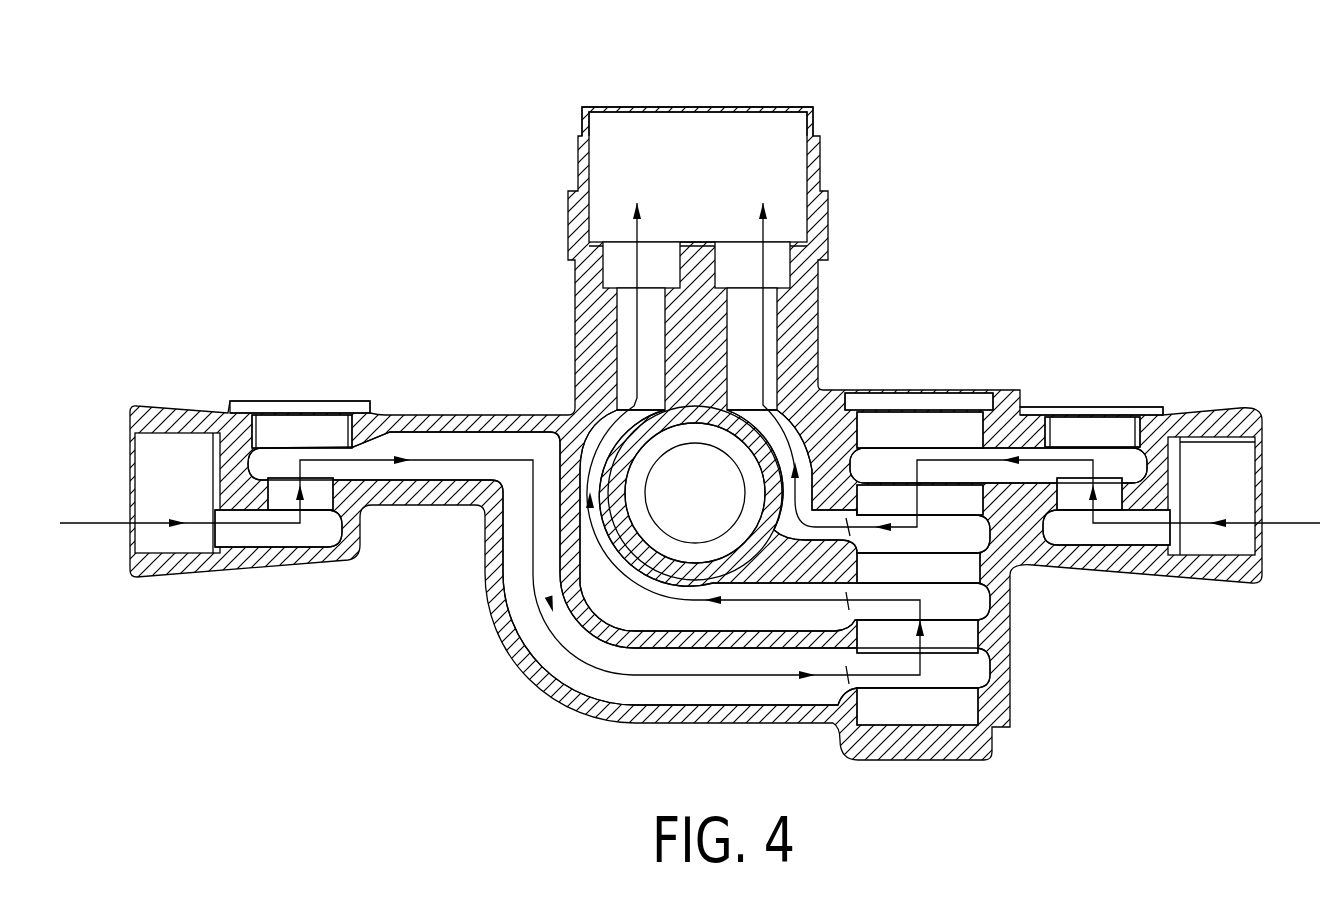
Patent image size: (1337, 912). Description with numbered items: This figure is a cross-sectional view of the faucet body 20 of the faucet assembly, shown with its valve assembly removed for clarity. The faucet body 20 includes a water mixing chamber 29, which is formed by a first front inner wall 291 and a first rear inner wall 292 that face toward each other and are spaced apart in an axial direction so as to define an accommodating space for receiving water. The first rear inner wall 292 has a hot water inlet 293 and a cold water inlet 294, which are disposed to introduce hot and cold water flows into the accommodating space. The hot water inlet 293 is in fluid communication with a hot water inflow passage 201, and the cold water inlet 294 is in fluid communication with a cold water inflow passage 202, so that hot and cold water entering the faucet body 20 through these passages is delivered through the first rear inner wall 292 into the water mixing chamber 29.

The faucet body 20 is at (470, 395).
The hot water inflow passage 201 is at (1240, 487).
The cold water inflow passage 202 is at (148, 470).
The water mixing chamber 29 is at (763, 157).
The first front inner wall 291 is at (742, 108).
The first rear inner wall 292 is at (688, 242).
The hot water inlet 293 is at (780, 242).
The cold water inlet 294 is at (627, 242).